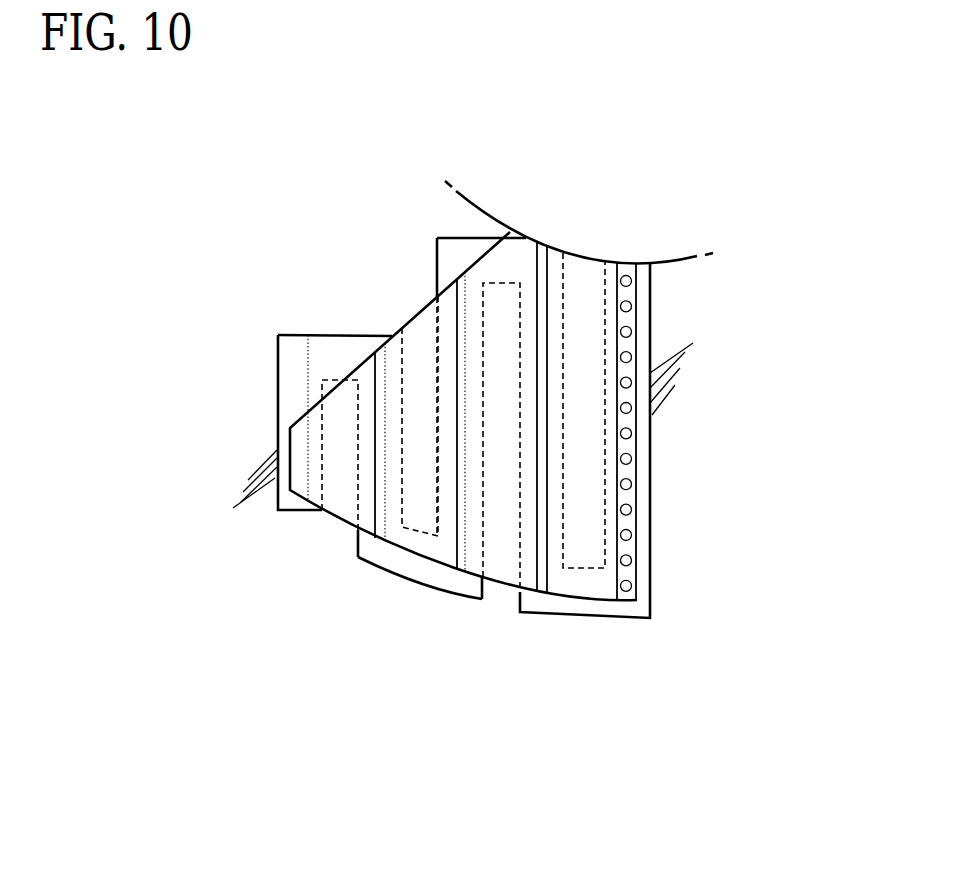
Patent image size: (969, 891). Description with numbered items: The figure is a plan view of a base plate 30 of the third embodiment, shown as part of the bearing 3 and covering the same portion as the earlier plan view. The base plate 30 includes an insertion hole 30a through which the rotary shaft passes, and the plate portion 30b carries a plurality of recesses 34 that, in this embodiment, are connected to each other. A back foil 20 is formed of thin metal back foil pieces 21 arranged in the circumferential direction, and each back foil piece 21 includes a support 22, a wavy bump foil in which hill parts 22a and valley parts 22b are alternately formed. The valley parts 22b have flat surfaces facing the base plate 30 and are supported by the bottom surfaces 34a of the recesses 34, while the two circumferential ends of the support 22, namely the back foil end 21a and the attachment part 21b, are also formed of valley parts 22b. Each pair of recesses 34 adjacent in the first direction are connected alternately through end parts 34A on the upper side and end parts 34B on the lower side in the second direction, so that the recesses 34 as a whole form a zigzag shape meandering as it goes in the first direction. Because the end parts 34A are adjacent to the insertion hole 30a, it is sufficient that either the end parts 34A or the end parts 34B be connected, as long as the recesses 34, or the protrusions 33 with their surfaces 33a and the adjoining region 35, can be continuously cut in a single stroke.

The thrust bearing 3 is at (288, 238).
The back foil 20 is at (511, 230).
The back foil piece 21 is at (470, 370).
The back foil end 21a is at (299, 458).
The attachment part 21b is at (630, 421).
The support 22 is at (483, 695).
The hill part 22a is at (427, 476).
The valley part 22b is at (460, 482).
The base plate 30 is at (700, 298).
The insertion hole 30a is at (484, 209).
The plate portion 30b is at (676, 409).
The protrusion 33 is at (416, 381).
The recess bottom 33a is at (397, 360).
The recess 34 is at (472, 388).
The bottom surface 34a is at (390, 366).
The end part on one side 34A is at (449, 232).
The end part on the other side 34B is at (362, 571).
The lower rib 35 is at (383, 557).